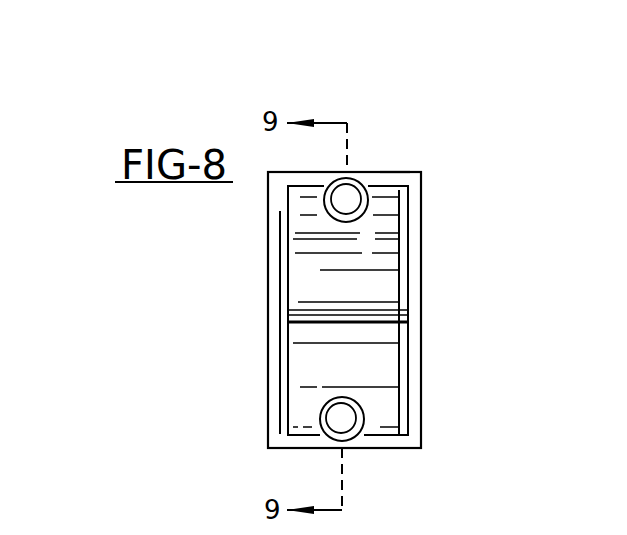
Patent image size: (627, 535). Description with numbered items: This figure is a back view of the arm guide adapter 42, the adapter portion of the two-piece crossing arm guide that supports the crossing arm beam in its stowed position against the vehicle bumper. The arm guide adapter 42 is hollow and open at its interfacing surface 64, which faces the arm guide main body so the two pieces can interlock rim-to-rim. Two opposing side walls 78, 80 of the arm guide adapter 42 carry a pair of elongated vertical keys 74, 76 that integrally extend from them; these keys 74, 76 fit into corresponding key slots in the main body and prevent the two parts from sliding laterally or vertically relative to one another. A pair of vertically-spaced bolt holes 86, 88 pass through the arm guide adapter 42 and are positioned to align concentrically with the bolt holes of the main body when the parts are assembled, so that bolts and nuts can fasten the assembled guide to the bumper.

The arm guide adapter 42 is at (413, 147).
The interfacing surface 64 is at (415, 225).
The elongated vertical key 74 is at (287, 265).
The elongated vertical key 76 is at (400, 272).
The side wall 78 is at (273, 355).
The side wall 80 is at (413, 362).
The bolt hole 86 is at (356, 192).
The bolt hole 88 is at (347, 422).